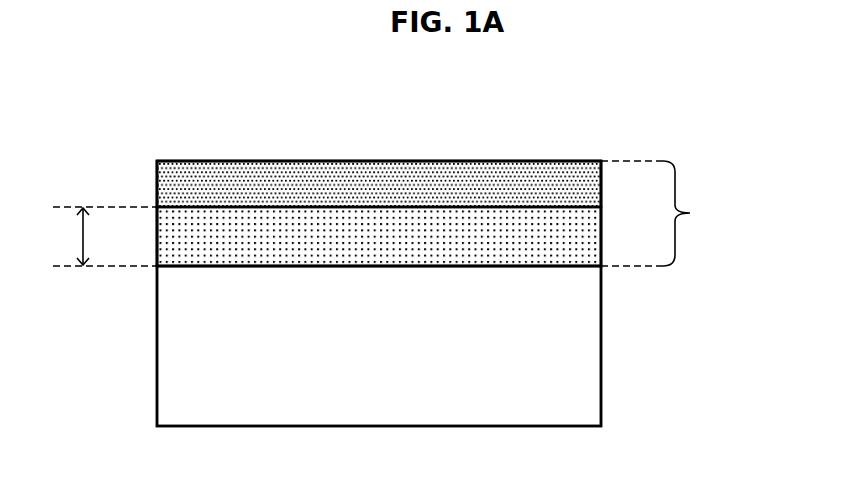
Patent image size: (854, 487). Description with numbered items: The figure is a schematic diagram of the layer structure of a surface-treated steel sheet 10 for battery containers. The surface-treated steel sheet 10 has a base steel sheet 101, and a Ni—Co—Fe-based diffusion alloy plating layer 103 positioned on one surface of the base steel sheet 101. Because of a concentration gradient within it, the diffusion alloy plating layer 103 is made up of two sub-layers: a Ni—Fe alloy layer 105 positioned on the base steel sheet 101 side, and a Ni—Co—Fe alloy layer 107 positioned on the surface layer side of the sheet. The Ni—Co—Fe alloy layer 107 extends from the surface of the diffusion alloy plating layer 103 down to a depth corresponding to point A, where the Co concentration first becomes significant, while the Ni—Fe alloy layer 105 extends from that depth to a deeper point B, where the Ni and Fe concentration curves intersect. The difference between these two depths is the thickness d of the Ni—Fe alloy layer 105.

The surface-treated steel sheet for battery containers 10 is at (378, 117).
The base steel sheet 101 is at (585, 353).
The diffusion alloy plating layer 103 is at (450, 213).
The Ni—Fe alloy layer 105 is at (173, 249).
The Ni—Co—Fe alloy layer 107 is at (173, 192).
The thickness of the Ni—Fe alloy layer d is at (105, 236).